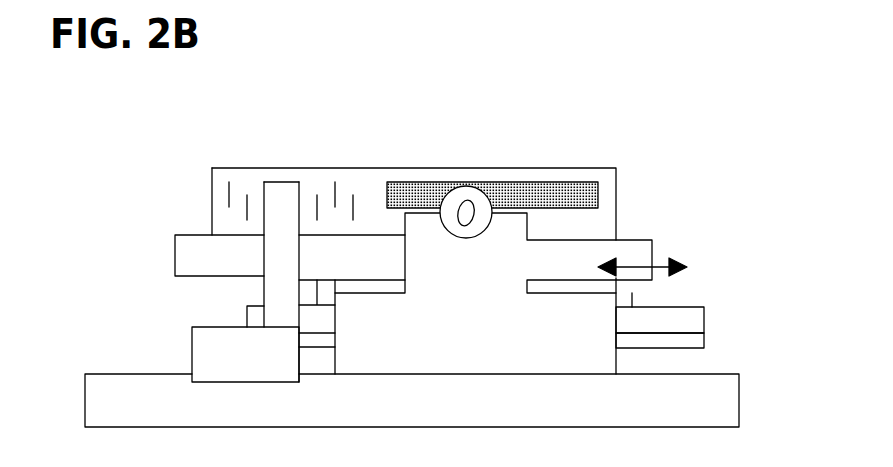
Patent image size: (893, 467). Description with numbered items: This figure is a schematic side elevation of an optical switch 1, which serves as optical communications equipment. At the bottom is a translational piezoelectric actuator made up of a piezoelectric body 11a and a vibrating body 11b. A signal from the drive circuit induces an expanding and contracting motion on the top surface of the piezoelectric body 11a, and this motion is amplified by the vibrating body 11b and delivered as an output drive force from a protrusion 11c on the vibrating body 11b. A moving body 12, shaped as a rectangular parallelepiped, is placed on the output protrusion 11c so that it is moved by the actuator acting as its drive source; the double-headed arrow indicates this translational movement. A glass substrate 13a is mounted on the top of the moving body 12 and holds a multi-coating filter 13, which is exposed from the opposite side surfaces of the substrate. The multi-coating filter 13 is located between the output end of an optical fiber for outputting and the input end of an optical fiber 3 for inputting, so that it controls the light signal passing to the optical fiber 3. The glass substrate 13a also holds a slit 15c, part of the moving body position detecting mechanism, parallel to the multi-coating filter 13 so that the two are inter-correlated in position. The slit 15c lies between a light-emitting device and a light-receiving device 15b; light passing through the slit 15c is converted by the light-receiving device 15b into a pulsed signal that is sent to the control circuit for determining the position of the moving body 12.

The optical switch 1 is at (137, 117).
The optical fiber for inputting 3 is at (467, 209).
The piezoelectric body 11a is at (697, 340).
The vibrating body 11b is at (698, 322).
The protrusion 11c is at (625, 297).
The moving body 12 is at (638, 253).
The multi-coating filter 13 is at (575, 188).
The glass substrate 13a is at (603, 223).
The light-receiving device 15b is at (281, 190).
The slit 15c is at (228, 178).